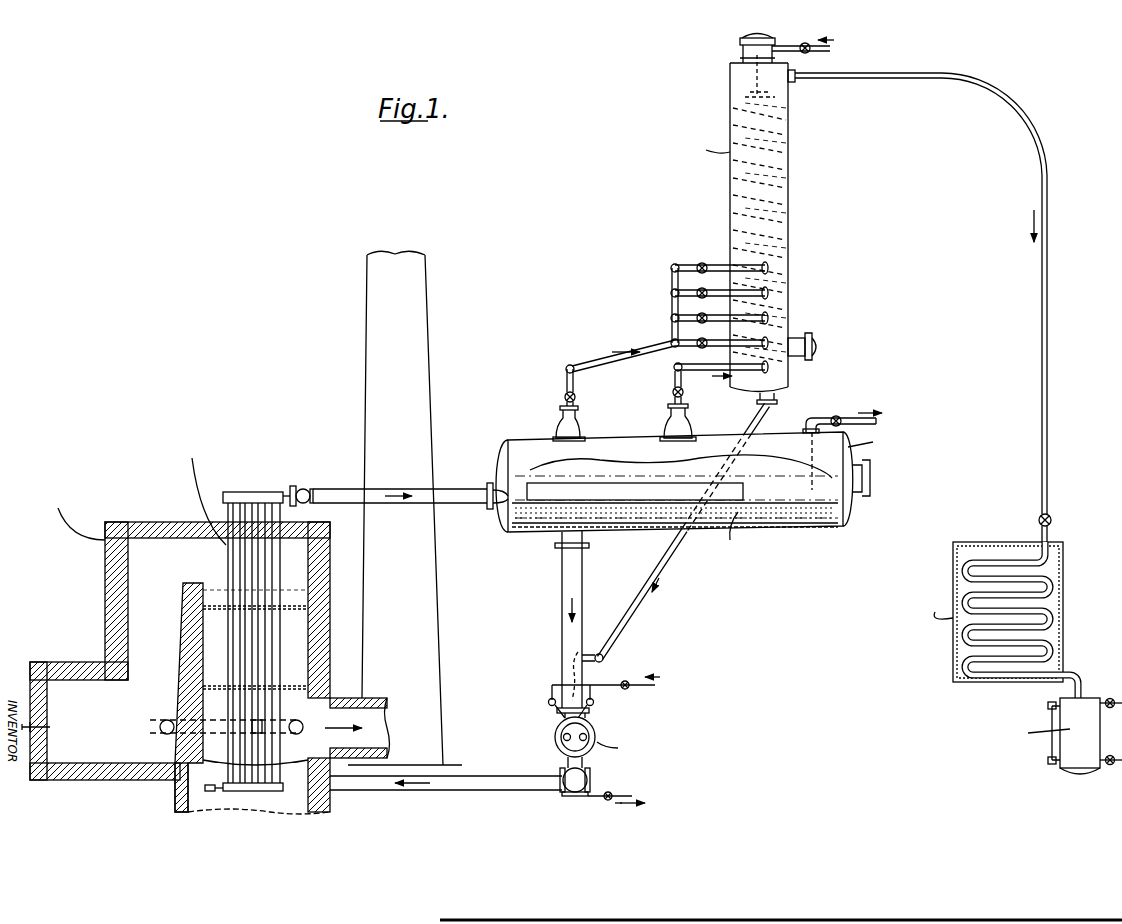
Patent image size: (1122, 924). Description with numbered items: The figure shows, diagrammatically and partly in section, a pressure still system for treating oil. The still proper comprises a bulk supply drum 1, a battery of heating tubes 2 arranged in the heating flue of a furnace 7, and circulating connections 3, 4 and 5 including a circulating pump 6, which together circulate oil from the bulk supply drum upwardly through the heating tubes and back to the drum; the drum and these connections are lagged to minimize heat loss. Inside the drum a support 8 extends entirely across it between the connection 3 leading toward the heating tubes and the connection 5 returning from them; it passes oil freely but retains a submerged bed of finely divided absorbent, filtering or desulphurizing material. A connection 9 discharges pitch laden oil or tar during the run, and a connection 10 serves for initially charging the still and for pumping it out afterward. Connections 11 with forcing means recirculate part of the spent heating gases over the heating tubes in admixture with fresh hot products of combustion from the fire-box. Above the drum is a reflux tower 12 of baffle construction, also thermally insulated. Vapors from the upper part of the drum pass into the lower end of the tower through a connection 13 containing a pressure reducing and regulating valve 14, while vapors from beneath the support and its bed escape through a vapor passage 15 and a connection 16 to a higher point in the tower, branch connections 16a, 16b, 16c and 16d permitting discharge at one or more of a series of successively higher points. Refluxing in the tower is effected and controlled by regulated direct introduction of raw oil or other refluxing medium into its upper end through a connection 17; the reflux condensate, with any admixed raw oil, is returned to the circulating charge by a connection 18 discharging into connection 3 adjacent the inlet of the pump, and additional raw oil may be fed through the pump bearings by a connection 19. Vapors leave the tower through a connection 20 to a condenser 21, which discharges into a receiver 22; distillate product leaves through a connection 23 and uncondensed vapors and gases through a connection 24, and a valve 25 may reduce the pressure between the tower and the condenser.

The bulk supply drum 1 is at (527, 438).
The battery of heating tubes 2 is at (270, 622).
The circulating connection 3 is at (562, 610).
The circulating connection 4 is at (488, 782).
The circulating connection 5 is at (332, 490).
The circulating pump 6 is at (556, 730).
The furnace 7 is at (105, 612).
The support 8 is at (606, 530).
The connection 9 is at (825, 417).
The connection 10 is at (622, 798).
The connections 11 is at (182, 717).
The reflux tower 12 is at (788, 201).
The connection 13 is at (673, 380).
The pressure reducing and regulating valve 14 is at (672, 396).
The vapor passage 15 is at (552, 468).
The connection 16 is at (588, 372).
The branch connection 16a is at (675, 339).
The branch connection 16b is at (675, 314).
The branch connection 16c is at (675, 289).
The branch connection 16d is at (675, 264).
The connection 17 is at (789, 44).
The connection 18 is at (676, 546).
The connection 19 is at (636, 688).
The connection 20 is at (1042, 328).
The condenser 21 is at (953, 662).
The receiver 22 is at (1070, 771).
The connection 23 is at (1112, 764).
The connection 24 is at (1108, 703).
The valve 25 is at (1052, 519).